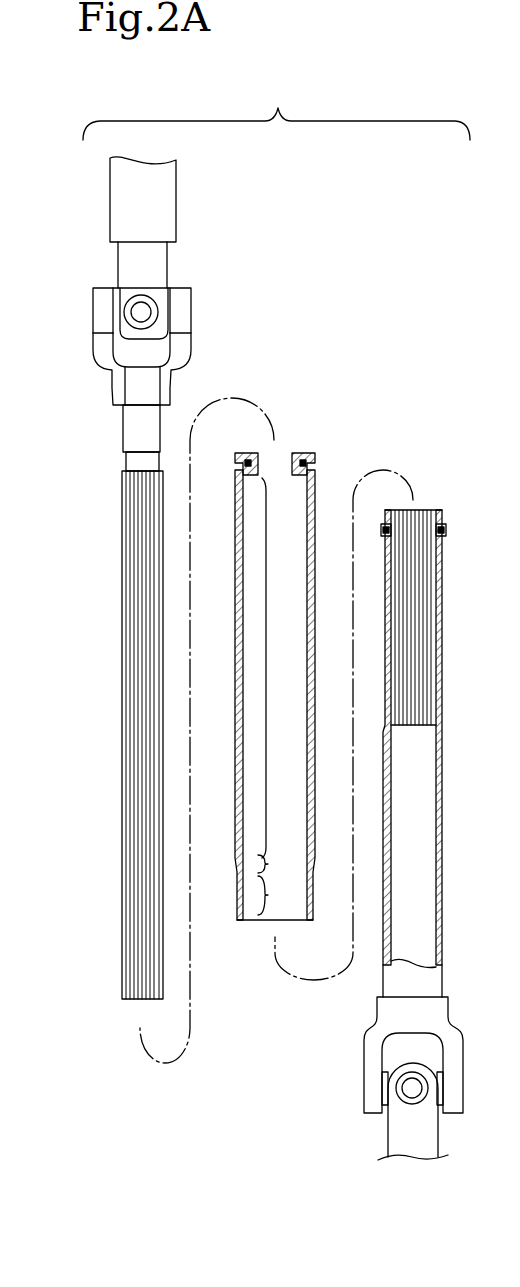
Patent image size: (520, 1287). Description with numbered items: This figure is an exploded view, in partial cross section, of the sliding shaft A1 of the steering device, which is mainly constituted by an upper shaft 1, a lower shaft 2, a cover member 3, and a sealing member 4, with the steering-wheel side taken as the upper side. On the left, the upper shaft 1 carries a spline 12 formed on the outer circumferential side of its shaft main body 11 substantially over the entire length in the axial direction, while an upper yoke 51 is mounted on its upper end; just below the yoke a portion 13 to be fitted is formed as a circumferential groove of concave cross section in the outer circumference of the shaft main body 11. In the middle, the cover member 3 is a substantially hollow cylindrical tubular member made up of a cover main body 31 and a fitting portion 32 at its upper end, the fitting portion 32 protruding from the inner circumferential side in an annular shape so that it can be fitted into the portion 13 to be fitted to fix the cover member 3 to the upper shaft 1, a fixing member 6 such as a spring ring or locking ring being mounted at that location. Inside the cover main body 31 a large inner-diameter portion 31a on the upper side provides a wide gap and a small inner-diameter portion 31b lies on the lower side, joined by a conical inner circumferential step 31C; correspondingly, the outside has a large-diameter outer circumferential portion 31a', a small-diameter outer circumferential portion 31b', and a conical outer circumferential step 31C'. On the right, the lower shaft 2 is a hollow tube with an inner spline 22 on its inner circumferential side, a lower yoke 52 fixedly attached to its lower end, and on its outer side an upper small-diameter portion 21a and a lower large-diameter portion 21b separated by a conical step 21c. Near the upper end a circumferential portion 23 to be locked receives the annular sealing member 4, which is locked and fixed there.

The sliding shaft A1 is at (276, 110).
The upper shaft 1 is at (121, 648).
The shaft main body 11 is at (133, 428).
The spline 12 is at (125, 553).
The portion to be fitted 13 is at (123, 460).
The upper yoke 51 is at (187, 357).
The lower shaft 2 is at (446, 807).
The small-diameter portion 21a is at (442, 660).
The large-diameter portion 21b is at (442, 875).
The step 21c is at (442, 728).
The inner spline 22 is at (415, 585).
The portion to be locked 23 is at (446, 532).
The sealing member 4 is at (384, 524).
The cover member 3 is at (256, 922).
The cover main body 31 is at (235, 535).
The large inner-diameter portion 31a is at (283, 668).
The large-diameter outer circumferential portion 31a' is at (218, 627).
The small inner-diameter portion 31b is at (282, 895).
The small-diameter outer circumferential portion 31b' is at (216, 935).
The inner circumferential step 31C is at (283, 865).
The outer circumferential step 31C' is at (219, 886).
The fitting portion 32 is at (280, 470).
The fixing member 6 is at (238, 468).
The lower yoke 52 is at (364, 1057).